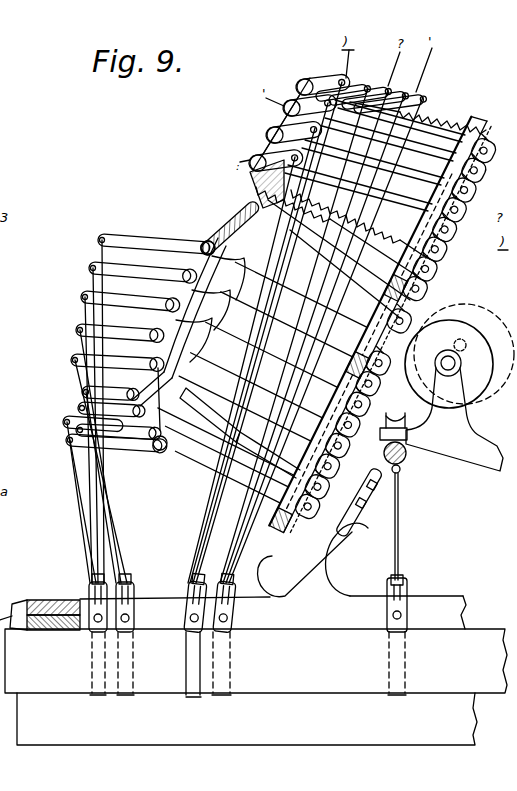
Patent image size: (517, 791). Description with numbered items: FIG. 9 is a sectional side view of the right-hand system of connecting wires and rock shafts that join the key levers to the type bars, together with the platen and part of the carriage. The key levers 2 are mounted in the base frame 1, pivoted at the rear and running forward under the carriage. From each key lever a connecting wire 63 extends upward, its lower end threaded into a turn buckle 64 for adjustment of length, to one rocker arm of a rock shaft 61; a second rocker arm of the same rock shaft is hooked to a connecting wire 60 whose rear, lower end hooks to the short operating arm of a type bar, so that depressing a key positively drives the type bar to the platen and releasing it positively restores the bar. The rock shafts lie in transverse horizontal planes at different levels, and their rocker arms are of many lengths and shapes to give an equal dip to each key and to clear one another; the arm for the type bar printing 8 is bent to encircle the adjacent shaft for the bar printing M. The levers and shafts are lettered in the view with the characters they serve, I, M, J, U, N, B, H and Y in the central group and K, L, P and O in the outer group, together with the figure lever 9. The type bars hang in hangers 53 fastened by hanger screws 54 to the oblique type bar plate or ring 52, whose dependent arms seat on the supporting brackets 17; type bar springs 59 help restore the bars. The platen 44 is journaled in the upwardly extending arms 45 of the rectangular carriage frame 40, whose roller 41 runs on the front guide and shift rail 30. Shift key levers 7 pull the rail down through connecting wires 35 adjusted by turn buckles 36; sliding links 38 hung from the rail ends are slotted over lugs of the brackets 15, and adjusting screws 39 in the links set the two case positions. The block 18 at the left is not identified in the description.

The base frame 1 is at (247, 719).
The key levers 2 is at (256, 661).
The shift key levers 7 is at (345, 462).
The type bar which prints 8 is at (392, 378).
The key lever 9 is at (406, 89).
The brackets 15 is at (396, 576).
The supporting brackets 17 is at (258, 562).
The block 18 is at (40, 600).
The front carriage guide and shift rail 30 is at (406, 457).
The connecting wires 35 is at (400, 541).
The turn buckles 36 is at (408, 580).
The sliding links 38 is at (358, 518).
The adjusting screws 39 is at (380, 488).
The carriage frame 40 is at (483, 468).
The roller 41 is at (400, 424).
The platen 44 is at (482, 346).
The upwardly extending arms 45 is at (448, 371).
The type bar plate or ring 52 is at (380, 324).
The type bar hangers 53 is at (490, 130).
The hanger screws 54 is at (386, 318).
The type bar springs 59 is at (371, 209).
The connecting wire 60 is at (210, 460).
The rock shafts 61 is at (208, 240).
The connecting wire 63 is at (76, 463).
The turn buckles 64 is at (92, 580).
The I type bar I is at (428, 305).
The type bar printing the character M is at (424, 337).
The key J is at (383, 395).
The key U is at (366, 418).
The key N is at (320, 497).
The B rock shaft B is at (314, 514).
The key H is at (337, 480).
The key Y is at (355, 439).
The key L is at (300, 80).
The key P is at (266, 131).
The key O is at (368, 84).
The K type bar K is at (425, 94).